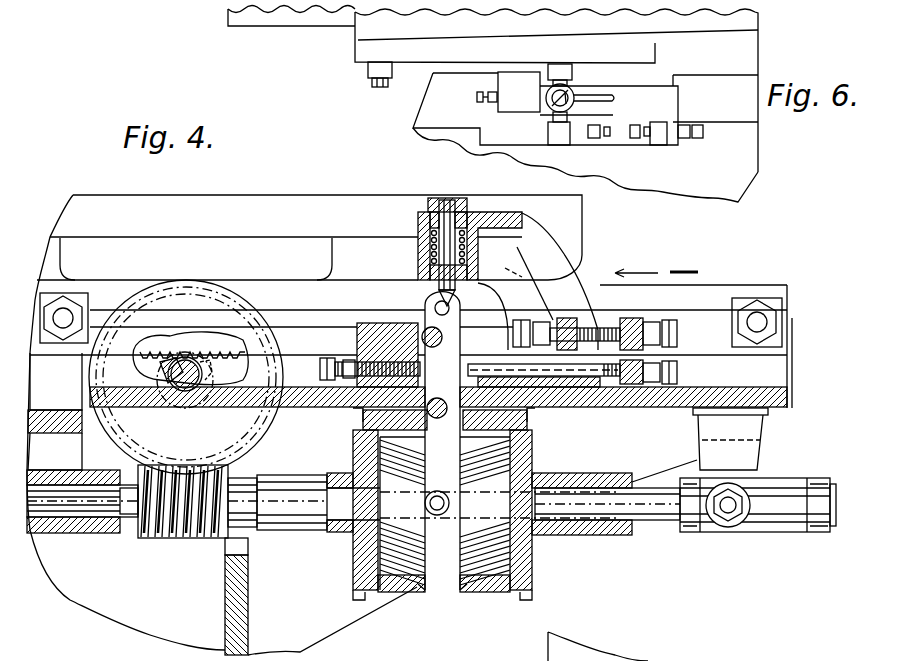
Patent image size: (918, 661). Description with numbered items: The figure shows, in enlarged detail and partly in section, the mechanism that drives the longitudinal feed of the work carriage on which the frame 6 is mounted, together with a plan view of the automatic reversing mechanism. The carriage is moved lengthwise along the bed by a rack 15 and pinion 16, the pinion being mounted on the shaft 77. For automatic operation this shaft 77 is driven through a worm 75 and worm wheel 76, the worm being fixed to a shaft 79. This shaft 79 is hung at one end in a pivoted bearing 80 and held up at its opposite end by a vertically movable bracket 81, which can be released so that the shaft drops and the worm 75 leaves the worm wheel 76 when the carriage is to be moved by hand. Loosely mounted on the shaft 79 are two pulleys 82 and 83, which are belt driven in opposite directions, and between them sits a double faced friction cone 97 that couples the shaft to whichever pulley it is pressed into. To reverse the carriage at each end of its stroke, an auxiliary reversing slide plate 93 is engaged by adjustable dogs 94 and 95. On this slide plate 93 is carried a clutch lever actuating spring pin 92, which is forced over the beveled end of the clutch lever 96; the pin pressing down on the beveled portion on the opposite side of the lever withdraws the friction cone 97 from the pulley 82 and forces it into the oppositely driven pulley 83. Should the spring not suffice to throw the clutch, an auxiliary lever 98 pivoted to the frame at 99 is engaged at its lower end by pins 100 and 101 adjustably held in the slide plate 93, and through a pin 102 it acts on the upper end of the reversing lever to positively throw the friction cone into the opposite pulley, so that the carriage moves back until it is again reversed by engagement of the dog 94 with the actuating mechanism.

In FIG. 6, the frame 6 is at (365, 33).
In FIG. 4, the frame 6 is at (557, 242).
In FIG. 4, the rack 15 is at (162, 355).
In FIG. 4, the pinion 16 is at (165, 376).
In FIG. 4, the worm 75 is at (177, 540).
In FIG. 4, the worm wheel 76 is at (262, 428).
In FIG. 4, the shaft 77 is at (190, 383).
In FIG. 4, the shaft 79 is at (60, 505).
In FIG. 4, the pivoted bearing 80 is at (762, 542).
In FIG. 4, the vertically movable bracket 81 is at (72, 448).
In FIG. 4, the pulley 82 is at (533, 573).
In FIG. 4, the pulley 83 is at (358, 567).
In FIG. 6, the clutch lever actuating spring pin 92 is at (552, 108).
In FIG. 4, the clutch lever actuating spring pin 92 is at (467, 212).
In FIG. 6, the auxiliary reversing slide plate 93 is at (676, 98).
In FIG. 4, the auxiliary reversing slide plate 93 is at (358, 338).
In FIG. 6, the adjustable dog 94 is at (372, 72).
In FIG. 4, the adjustable dog 94 is at (78, 300).
In FIG. 6, the adjustable dog 95 is at (570, 72).
In FIG. 4, the adjustable dog 95 is at (767, 308).
In FIG. 4, the clutch lever 96 is at (532, 418).
In FIG. 4, the double faced friction cone 97 is at (457, 590).
In FIG. 4, the auxiliary lever 98 is at (452, 353).
In FIG. 4, the pivot 99 is at (430, 333).
In FIG. 4, the pin 100 is at (322, 372).
In FIG. 4, the pin 101 is at (560, 368).
In FIG. 4, the pin 102 is at (447, 303).